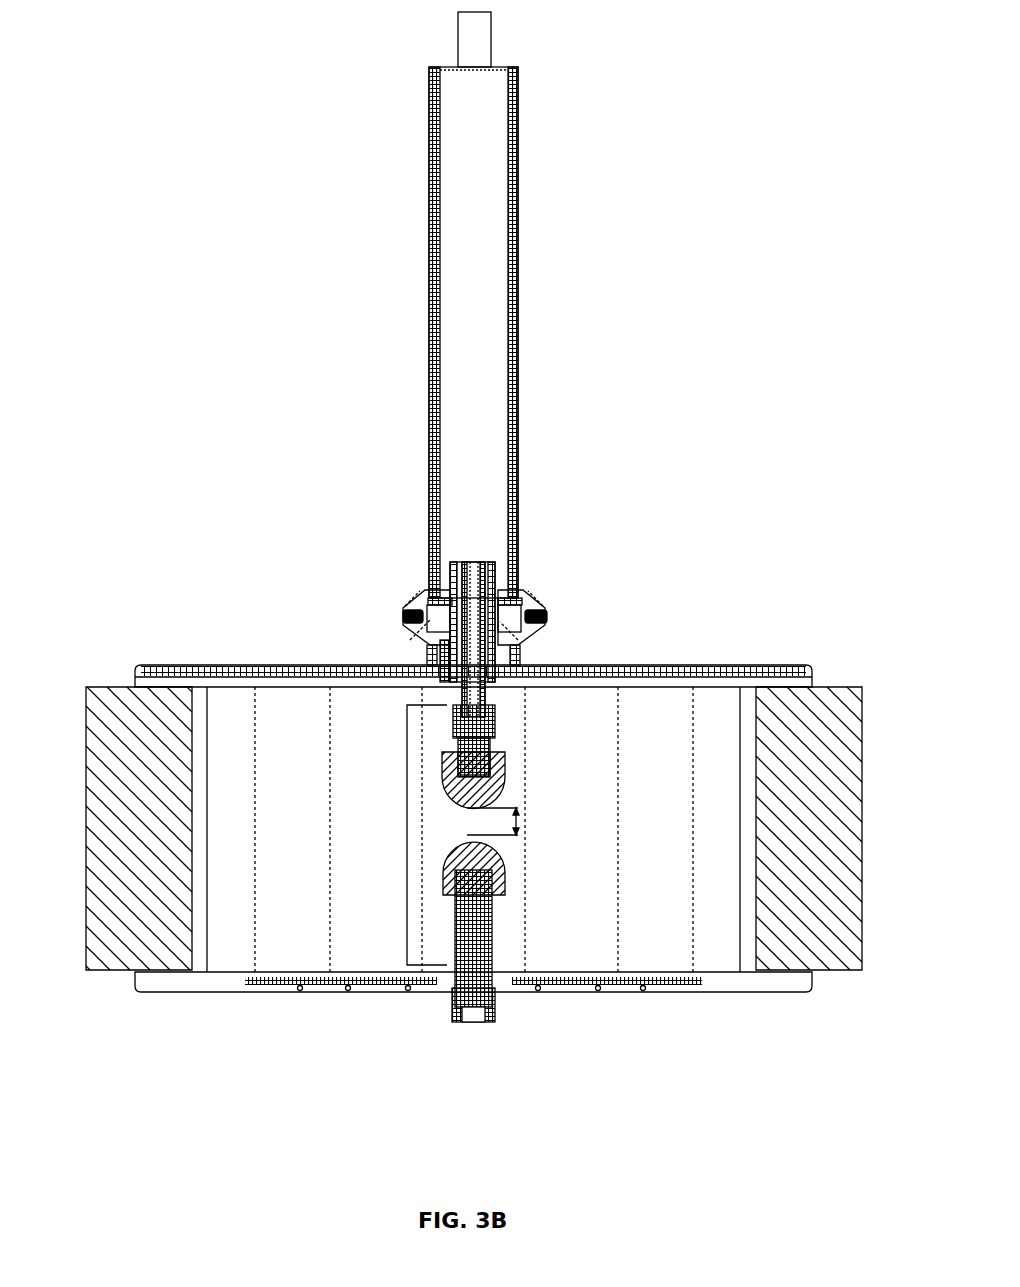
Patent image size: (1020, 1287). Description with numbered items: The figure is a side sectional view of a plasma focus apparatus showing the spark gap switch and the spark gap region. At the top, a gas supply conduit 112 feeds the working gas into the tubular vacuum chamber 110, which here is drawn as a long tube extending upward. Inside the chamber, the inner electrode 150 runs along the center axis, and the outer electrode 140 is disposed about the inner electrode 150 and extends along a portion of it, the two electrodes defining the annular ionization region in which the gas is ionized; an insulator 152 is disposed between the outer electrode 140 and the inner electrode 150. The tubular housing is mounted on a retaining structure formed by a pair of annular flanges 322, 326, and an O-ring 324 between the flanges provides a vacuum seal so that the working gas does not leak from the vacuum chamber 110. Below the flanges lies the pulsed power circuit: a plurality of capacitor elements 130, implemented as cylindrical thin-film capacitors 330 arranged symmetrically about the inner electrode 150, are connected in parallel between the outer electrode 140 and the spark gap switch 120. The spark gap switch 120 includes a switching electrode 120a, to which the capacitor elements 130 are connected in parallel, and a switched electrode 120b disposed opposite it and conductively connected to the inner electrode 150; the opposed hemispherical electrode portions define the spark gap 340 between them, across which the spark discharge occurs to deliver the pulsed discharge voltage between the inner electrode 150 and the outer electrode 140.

The gas supply conduit 112 is at (480, 38).
The vacuum chamber 110 is at (470, 310).
The outer electrode 140 is at (455, 582).
The inner electrode 150 is at (465, 565).
The insulator 152 is at (455, 658).
The annular flange 322 is at (532, 602).
The O-ring 324 is at (545, 613).
The annular flange 326 is at (532, 632).
The capacitor elements 130 is at (655, 707).
The cylindrical thin-film capacitors 330 is at (708, 722).
The spark gap switch 120 is at (407, 813).
The switching electrode 120a is at (503, 768).
The switched electrode 120b is at (492, 948).
The spark gap 340 is at (525, 823).